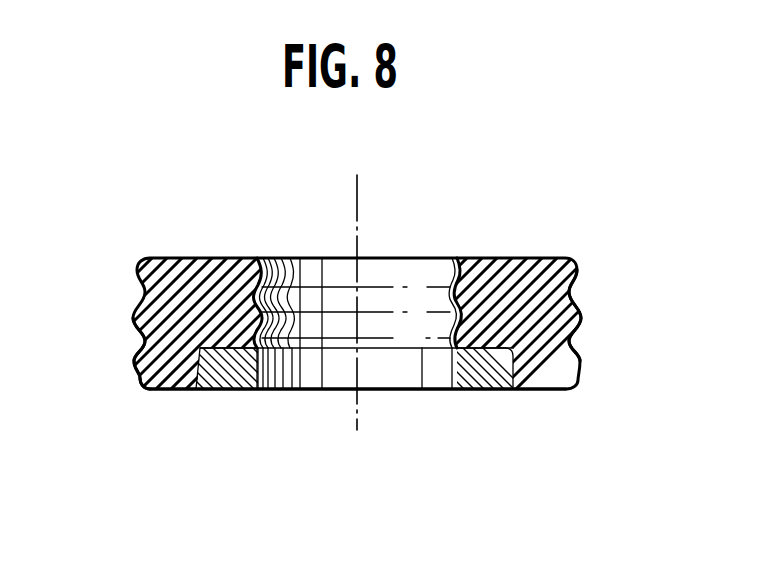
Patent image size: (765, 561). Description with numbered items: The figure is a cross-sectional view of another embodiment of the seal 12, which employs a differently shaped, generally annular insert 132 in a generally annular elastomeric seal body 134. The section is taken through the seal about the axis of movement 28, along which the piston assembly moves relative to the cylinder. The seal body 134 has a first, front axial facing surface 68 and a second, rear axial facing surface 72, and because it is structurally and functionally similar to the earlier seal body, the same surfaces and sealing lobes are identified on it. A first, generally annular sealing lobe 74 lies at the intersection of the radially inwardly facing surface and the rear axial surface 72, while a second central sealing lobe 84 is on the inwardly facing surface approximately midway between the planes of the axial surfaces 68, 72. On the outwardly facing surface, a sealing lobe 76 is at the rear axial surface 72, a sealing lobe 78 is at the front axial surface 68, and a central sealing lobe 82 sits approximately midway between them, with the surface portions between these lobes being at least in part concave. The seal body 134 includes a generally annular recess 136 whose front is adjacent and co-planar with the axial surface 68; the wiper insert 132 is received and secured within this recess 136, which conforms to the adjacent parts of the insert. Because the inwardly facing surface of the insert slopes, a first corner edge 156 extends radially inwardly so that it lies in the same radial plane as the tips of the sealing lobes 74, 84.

The seal 12 is at (135, 381).
The axis of movement 28 is at (355, 207).
The first, front, axial facing surface 68 is at (550, 389).
The second, rear axial facing surface 72 is at (538, 266).
The first sealing lobe 74 is at (472, 266).
The sealing lobe 76 is at (137, 266).
The sealing lobe 78 is at (136, 374).
The central sealing lobe 82 is at (582, 317).
The second central sealing lobe 84 is at (293, 266).
The insert 132 is at (250, 389).
The seal body 134 is at (192, 389).
The recess 136 is at (515, 362).
The first corner edge 156 is at (452, 350).